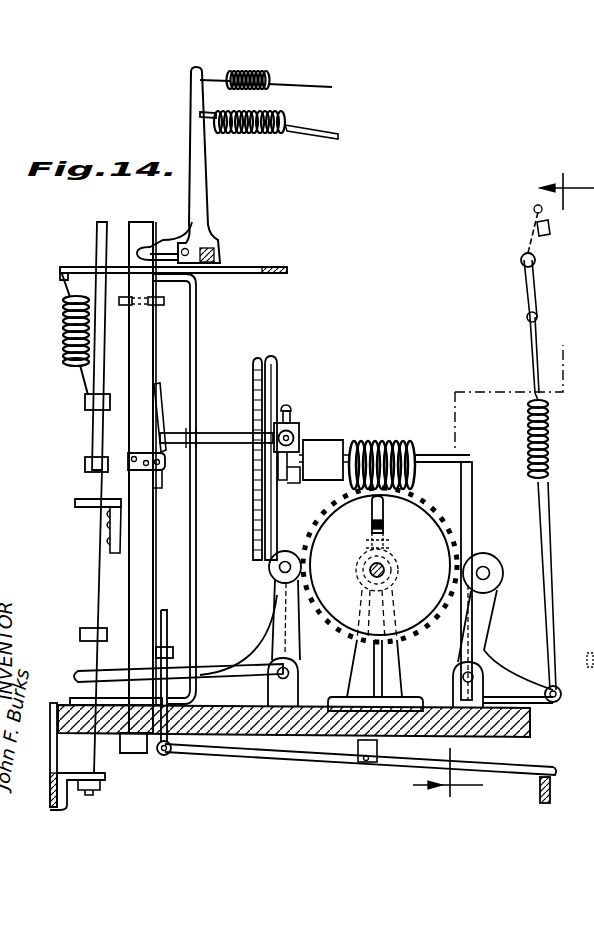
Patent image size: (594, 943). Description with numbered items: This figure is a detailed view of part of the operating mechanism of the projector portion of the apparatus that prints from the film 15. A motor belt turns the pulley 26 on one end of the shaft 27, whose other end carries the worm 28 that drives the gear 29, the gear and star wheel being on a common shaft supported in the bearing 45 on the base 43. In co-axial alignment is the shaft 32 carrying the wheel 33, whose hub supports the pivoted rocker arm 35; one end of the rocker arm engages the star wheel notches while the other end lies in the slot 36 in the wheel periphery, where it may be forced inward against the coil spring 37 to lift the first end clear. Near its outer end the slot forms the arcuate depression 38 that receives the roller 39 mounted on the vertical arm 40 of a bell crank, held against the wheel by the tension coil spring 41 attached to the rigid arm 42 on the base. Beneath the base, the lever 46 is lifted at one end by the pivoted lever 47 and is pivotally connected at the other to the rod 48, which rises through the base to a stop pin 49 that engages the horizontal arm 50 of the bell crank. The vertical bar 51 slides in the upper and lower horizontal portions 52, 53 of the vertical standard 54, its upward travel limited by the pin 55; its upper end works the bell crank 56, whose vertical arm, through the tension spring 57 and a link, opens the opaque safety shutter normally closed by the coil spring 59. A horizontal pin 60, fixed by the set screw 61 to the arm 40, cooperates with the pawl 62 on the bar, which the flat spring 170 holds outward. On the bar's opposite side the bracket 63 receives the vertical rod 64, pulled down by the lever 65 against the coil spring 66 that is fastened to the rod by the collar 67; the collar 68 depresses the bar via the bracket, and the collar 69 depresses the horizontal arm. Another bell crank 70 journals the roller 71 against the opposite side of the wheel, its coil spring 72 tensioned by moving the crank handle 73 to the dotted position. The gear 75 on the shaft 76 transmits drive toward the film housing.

The film 15 is at (503, 486).
The pulley 26 is at (276, 368).
The shaft 27 is at (347, 440).
The worm 28 is at (377, 440).
The gear 29 is at (416, 510).
The shaft 32 is at (372, 575).
The wheel 33 is at (437, 532).
The rocker arm 35 is at (372, 512).
The slot 36 is at (368, 525).
The coil spring 37 is at (390, 540).
The arcuate depression 38 is at (386, 520).
The roller 39 is at (269, 570).
The vertical arm 40 is at (277, 602).
The tension coil spring 41 is at (428, 455).
The rigid arm 42 is at (473, 466).
The base 43 is at (531, 727).
The bearing 45 is at (401, 667).
The lever 46 is at (518, 772).
The pivoted lever 47 is at (551, 791).
The rod 48 is at (162, 672).
The stop pin 49 is at (173, 652).
The horizontal arm 50 is at (218, 664).
The vertical bar 51 is at (137, 511).
The upper horizontal portion 52 is at (90, 262).
The lower horizontal portion 53 is at (70, 697).
The vertical standard 54 is at (197, 322).
The pin 55 is at (164, 301).
The bell crank 56 is at (204, 213).
The tension spring 57 is at (266, 75).
The coil spring 59 is at (309, 132).
The horizontal pin 60 is at (217, 433).
The set screw 61 is at (288, 406).
The pawl 62 is at (165, 455).
The bracket 63 is at (75, 503).
The vertical rod 64 is at (90, 479).
The lever 65 is at (50, 797).
The coil spring 66 is at (64, 322).
The collar 67 is at (85, 403).
The collar 68 is at (85, 463).
The collar 69 is at (80, 634).
The bell crank 70 is at (484, 609).
The roller 71 is at (497, 566).
The coil spring 72 is at (549, 433).
The crank handle 73 is at (535, 288).
The gear 75 is at (569, 688).
The shaft 76 is at (585, 638).
The flat spring 170 is at (160, 397).